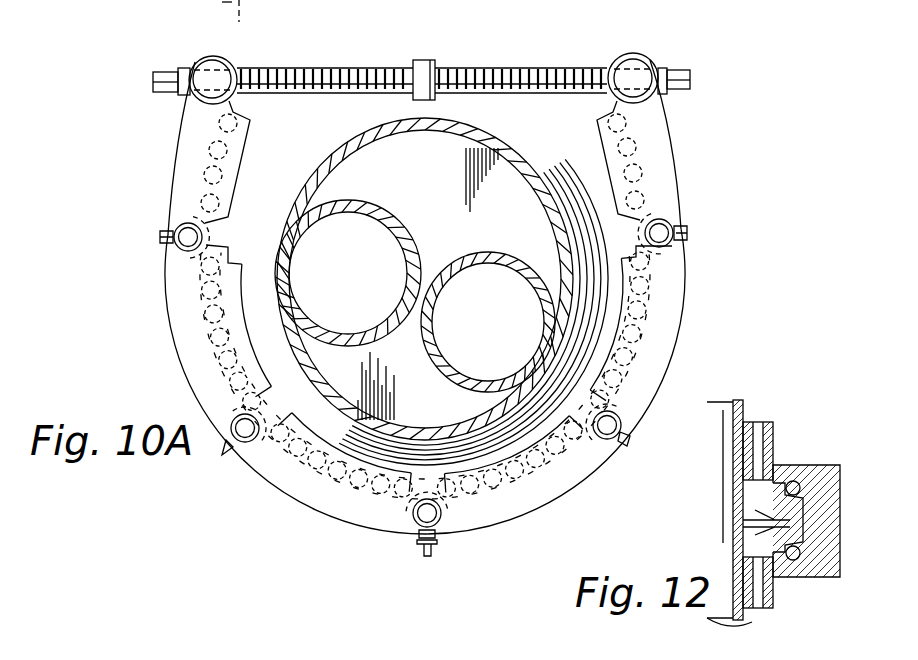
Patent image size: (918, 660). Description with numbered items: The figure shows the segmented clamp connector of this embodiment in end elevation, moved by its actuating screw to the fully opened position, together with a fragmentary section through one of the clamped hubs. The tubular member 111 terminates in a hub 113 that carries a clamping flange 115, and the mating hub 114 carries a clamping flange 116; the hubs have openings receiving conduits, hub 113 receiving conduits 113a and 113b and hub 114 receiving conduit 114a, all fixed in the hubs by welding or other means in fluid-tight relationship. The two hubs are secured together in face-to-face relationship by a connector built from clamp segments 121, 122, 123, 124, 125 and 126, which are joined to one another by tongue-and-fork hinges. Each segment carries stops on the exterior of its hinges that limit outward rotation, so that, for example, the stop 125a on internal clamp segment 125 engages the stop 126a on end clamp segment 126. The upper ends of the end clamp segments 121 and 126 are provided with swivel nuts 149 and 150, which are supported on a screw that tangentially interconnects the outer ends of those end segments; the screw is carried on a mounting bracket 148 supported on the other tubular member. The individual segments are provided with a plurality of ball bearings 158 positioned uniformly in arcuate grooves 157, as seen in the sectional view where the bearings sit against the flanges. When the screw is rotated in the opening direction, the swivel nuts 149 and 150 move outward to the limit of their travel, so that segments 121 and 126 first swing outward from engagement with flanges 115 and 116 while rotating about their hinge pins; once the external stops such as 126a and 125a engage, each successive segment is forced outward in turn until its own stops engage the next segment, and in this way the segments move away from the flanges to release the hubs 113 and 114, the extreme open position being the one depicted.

In FIG. 10A, the tubular member 111 is at (477, 135).
In FIG. 10A, the hub 113 is at (432, 186).
In FIG. 12, the hub 113 is at (769, 585).
In FIG. 10A, the conduit 113a is at (452, 272).
In FIG. 12, the conduit 113a is at (745, 618).
In FIG. 10A, the conduit 113b is at (329, 217).
In FIG. 12, the hub 114 is at (766, 480).
In FIG. 12, the conduit 114a is at (742, 400).
In FIG. 10A, the clamping flange 115 is at (528, 155).
In FIG. 12, the clamping flange 115 is at (790, 502).
In FIG. 12, the clamping flange 116 is at (785, 526).
In FIG. 10A, the end clamp segment 121 is at (168, 172).
In FIG. 10A, the internal clamp segment 122 is at (165, 320).
In FIG. 10A, the internal clamp segment 123 is at (311, 505).
In FIG. 10A, the internal clamp segment 124 is at (539, 494).
In FIG. 10A, the internal clamp segment 125 is at (686, 312).
In FIG. 10A, the stop 125a is at (688, 231).
In FIG. 10A, the end clamp segment 126 is at (683, 153).
In FIG. 10A, the stop 126a is at (688, 216).
In FIG. 10A, the mounting bracket 148 is at (423, 60).
In FIG. 10A, the swivel nut 149 is at (206, 56).
In FIG. 10A, the swivel nut 150 is at (631, 53).
In FIG. 12, the arcuate groove 157 is at (812, 485).
In FIG. 12, the ball bearing 158 is at (798, 486).